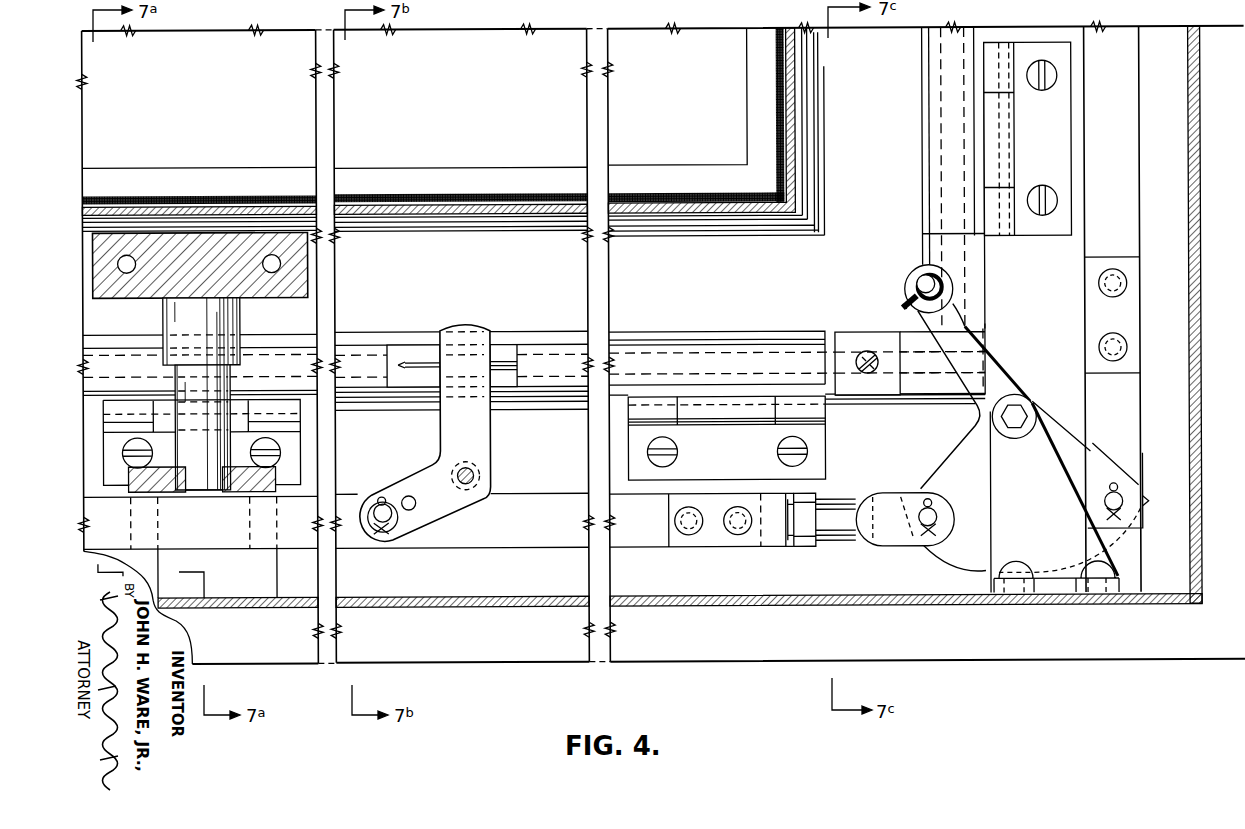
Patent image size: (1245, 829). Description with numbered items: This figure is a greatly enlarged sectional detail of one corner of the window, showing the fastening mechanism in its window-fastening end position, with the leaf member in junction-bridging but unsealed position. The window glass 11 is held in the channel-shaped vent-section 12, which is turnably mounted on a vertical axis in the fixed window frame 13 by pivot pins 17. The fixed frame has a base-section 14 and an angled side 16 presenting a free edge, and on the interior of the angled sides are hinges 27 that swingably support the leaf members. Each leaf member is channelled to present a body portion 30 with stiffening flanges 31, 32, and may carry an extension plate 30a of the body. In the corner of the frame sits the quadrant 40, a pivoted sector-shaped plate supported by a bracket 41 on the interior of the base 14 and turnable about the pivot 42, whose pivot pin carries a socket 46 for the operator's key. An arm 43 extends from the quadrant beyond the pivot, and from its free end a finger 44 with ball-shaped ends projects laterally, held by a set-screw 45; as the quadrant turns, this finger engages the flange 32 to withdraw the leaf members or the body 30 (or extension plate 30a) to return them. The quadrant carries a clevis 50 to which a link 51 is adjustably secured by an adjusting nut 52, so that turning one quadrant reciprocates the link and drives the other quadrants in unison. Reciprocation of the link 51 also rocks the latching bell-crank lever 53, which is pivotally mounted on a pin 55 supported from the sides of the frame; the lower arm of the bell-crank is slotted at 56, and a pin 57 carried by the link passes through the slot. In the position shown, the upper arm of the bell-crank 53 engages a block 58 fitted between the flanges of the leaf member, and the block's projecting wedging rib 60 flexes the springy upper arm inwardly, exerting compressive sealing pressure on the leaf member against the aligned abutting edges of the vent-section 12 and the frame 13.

The window glass 11 is at (415, 98).
The window vent-section 12 is at (453, 147).
The fixed window frame 13 is at (718, 642).
The base-section 14 is at (225, 603).
The angled side 16 is at (604, 435).
The pivot pins 17 is at (202, 394).
The hinge 27 is at (300, 451).
The body portion 30 is at (928, 170).
The extension plate 30a is at (848, 338).
The stiffening flange 31 is at (918, 138).
The stiffening flange 32 is at (563, 390).
The quadrant 40 is at (956, 453).
The bracket 41 is at (1113, 558).
The pivot 42 is at (1030, 403).
The arm 43 is at (1000, 360).
The finger 44 is at (912, 272).
The set-screw 45 is at (904, 306).
The socket 46 is at (1018, 432).
The clevis 50 is at (895, 548).
The link 51 is at (439, 520).
The adjusting nut 52 is at (800, 548).
The latching bell-crank lever 53 is at (452, 434).
The pin 55 is at (479, 472).
The slot 56 is at (409, 509).
The pin 57 is at (365, 538).
The block 58 is at (403, 350).
The wedging rib 60 is at (503, 358).